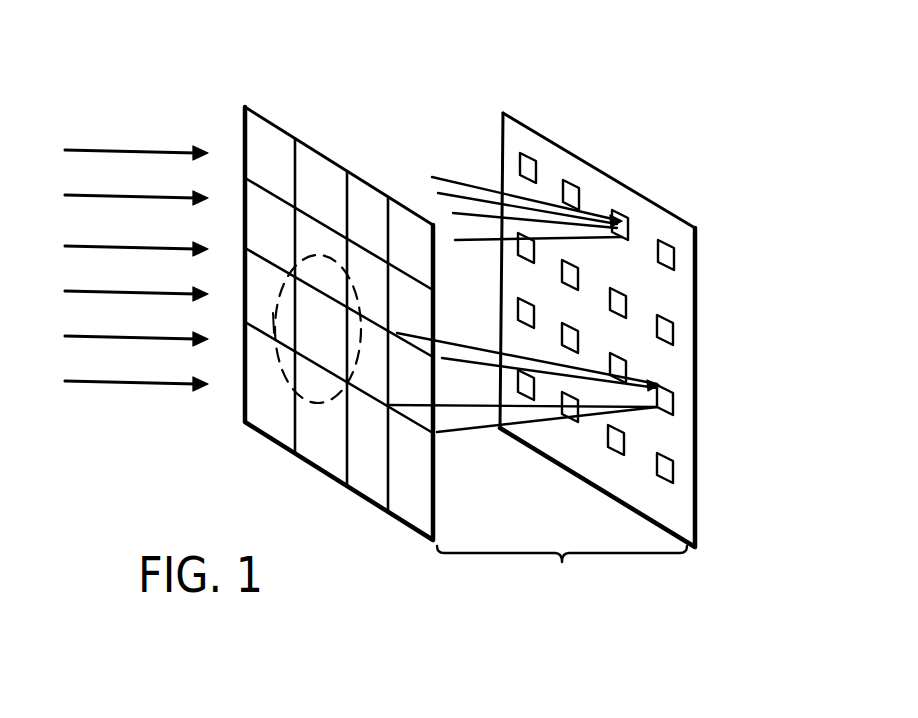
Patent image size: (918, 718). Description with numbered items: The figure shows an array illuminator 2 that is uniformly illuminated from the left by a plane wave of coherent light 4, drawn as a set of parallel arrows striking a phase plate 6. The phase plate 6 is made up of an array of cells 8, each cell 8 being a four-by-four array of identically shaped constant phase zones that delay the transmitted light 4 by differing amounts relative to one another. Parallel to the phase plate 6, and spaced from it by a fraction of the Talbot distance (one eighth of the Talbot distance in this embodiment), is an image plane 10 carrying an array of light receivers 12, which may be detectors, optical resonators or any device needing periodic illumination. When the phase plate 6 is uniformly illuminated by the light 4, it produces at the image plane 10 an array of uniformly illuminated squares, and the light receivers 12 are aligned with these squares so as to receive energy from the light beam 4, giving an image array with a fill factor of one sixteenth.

The array illuminator 2 is at (477, 64).
The plane wave of coherent light 4 is at (120, 140).
The phase plate 6 is at (268, 116).
The cell 8 is at (345, 218).
The image plane 10 is at (548, 138).
The light receivers 12 is at (659, 389).